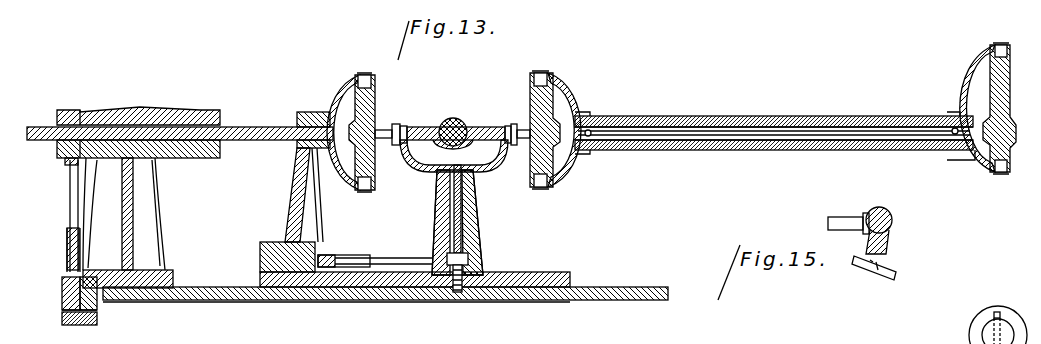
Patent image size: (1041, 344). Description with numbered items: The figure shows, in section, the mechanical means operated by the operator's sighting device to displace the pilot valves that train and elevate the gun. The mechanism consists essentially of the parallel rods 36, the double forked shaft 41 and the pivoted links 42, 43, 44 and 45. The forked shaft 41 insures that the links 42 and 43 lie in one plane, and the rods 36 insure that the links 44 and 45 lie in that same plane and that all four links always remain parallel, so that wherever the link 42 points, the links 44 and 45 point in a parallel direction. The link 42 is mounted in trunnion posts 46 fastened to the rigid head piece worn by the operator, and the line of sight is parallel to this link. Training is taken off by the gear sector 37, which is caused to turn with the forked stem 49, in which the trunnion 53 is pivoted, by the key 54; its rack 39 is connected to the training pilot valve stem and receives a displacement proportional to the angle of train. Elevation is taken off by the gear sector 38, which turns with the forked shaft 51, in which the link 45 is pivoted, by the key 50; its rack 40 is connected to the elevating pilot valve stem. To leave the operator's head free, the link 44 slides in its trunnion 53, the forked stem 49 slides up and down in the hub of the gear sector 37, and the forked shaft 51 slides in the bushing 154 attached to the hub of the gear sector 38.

In FIG. 13, the parallel rods 36 is at (521, 127).
In FIG. 13, the gear sector 37 is at (396, 258).
In FIG. 13, the gear sector 38 is at (70, 191).
In FIG. 13, the rack 39 is at (318, 256).
In FIG. 13, the rack 40 is at (62, 300).
In FIG. 13, the double forked shaft 41 is at (803, 118).
In FIG. 13, the pivoted link 42 is at (990, 80).
In FIG. 15, the pivoted link 42 is at (845, 217).
In FIG. 13, the pivoted link 43 is at (547, 107).
In FIG. 13, the pivoted link 44 is at (460, 118).
In FIG. 13, the pivoted link 45 is at (373, 112).
In FIG. 15, the trunnion posts 46 is at (884, 246).
In FIG. 13, the forked stem 49 is at (497, 167).
In FIG. 13, the key 50 is at (62, 127).
In FIG. 13, the forked shaft 51 is at (245, 140).
In FIG. 13, the trunnion 53 is at (456, 118).
In FIG. 13, the key 54 is at (470, 226).
In FIG. 13, the bushing 154 is at (211, 112).